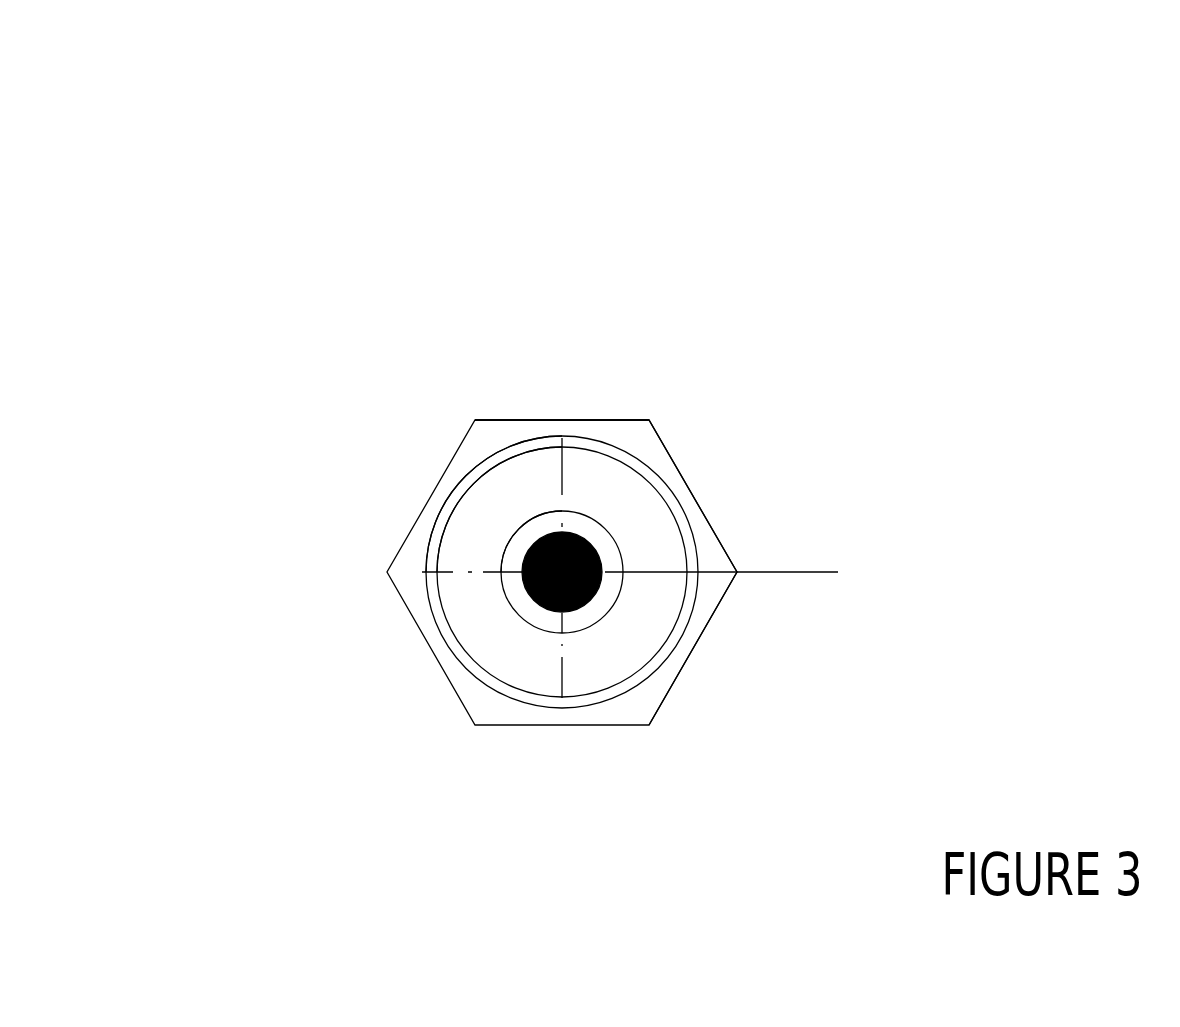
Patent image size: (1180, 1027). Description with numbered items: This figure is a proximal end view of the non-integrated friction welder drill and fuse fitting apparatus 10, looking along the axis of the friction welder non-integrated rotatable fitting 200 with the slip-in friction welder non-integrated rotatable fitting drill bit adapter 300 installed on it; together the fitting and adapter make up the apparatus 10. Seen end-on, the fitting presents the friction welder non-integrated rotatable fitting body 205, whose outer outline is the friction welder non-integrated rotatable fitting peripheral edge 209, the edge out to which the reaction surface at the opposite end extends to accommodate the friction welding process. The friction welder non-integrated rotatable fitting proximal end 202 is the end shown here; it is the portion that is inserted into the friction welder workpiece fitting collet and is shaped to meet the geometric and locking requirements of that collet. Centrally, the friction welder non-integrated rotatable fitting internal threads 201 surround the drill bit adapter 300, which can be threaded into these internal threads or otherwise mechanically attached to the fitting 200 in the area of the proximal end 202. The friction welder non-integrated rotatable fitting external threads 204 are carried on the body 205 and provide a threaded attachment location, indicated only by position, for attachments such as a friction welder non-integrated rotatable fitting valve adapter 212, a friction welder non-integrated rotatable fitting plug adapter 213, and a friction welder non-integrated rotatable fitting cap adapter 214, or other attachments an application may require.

The friction welder drill and fuse fitting apparatus 10 is at (550, 639).
The friction welder non-integrated rotatable fitting 200 is at (364, 371).
The friction welder non-integrated rotatable fitting internal threads 201 is at (451, 402).
The friction welder non-integrated rotatable fitting proximal end 202 is at (479, 371).
The friction welder non-integrated rotatable fitting external threads 204 is at (771, 379).
The friction welder non-integrated rotatable fitting body 205 is at (696, 370).
The friction welder non-integrated rotatable fitting peripheral edge 209 is at (368, 434).
The friction welder non-integrated rotatable fitting valve adapter 212 is at (568, 316).
The friction welder non-integrated rotatable fitting plug adapter 213 is at (613, 365).
The friction welder non-integrated rotatable fitting cap adapter 214 is at (623, 302).
The friction welder non-integrated rotatable fitting drill bit adapter 300 is at (644, 365).